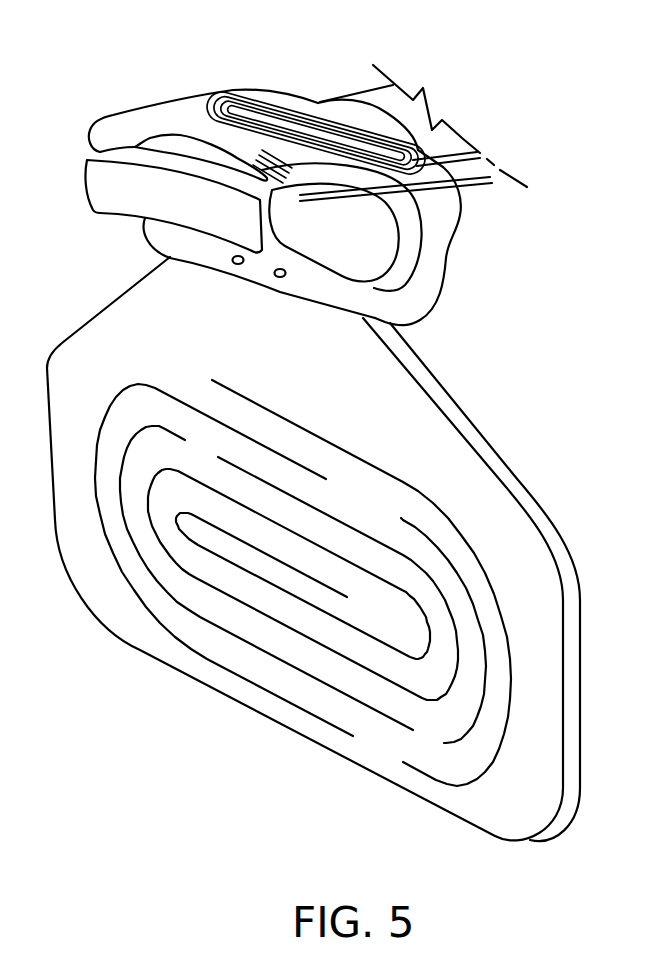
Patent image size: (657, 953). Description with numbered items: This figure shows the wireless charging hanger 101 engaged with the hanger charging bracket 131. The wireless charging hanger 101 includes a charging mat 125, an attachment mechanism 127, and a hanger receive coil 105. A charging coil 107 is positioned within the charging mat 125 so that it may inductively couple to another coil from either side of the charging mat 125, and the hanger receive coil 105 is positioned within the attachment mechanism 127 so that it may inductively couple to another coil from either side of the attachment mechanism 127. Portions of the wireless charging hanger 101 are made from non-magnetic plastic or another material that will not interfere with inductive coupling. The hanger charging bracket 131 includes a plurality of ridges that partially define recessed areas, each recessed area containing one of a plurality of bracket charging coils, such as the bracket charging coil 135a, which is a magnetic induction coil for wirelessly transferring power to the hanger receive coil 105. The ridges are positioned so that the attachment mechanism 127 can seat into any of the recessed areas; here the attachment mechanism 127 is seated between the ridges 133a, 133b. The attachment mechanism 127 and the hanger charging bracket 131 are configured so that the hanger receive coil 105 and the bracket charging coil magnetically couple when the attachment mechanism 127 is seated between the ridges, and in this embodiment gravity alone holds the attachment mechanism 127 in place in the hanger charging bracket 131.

The wireless charging hanger 101 is at (324, 561).
The hanger receive coil 105 is at (293, 105).
The charging coil 107 is at (278, 697).
The charging mat 125 is at (90, 585).
The attachment mechanism 127 is at (453, 210).
The hanger charging bracket 131 is at (470, 150).
The ridge 133a is at (192, 143).
The ridge 133b is at (347, 103).
The bracket charging coil 135a is at (287, 172).